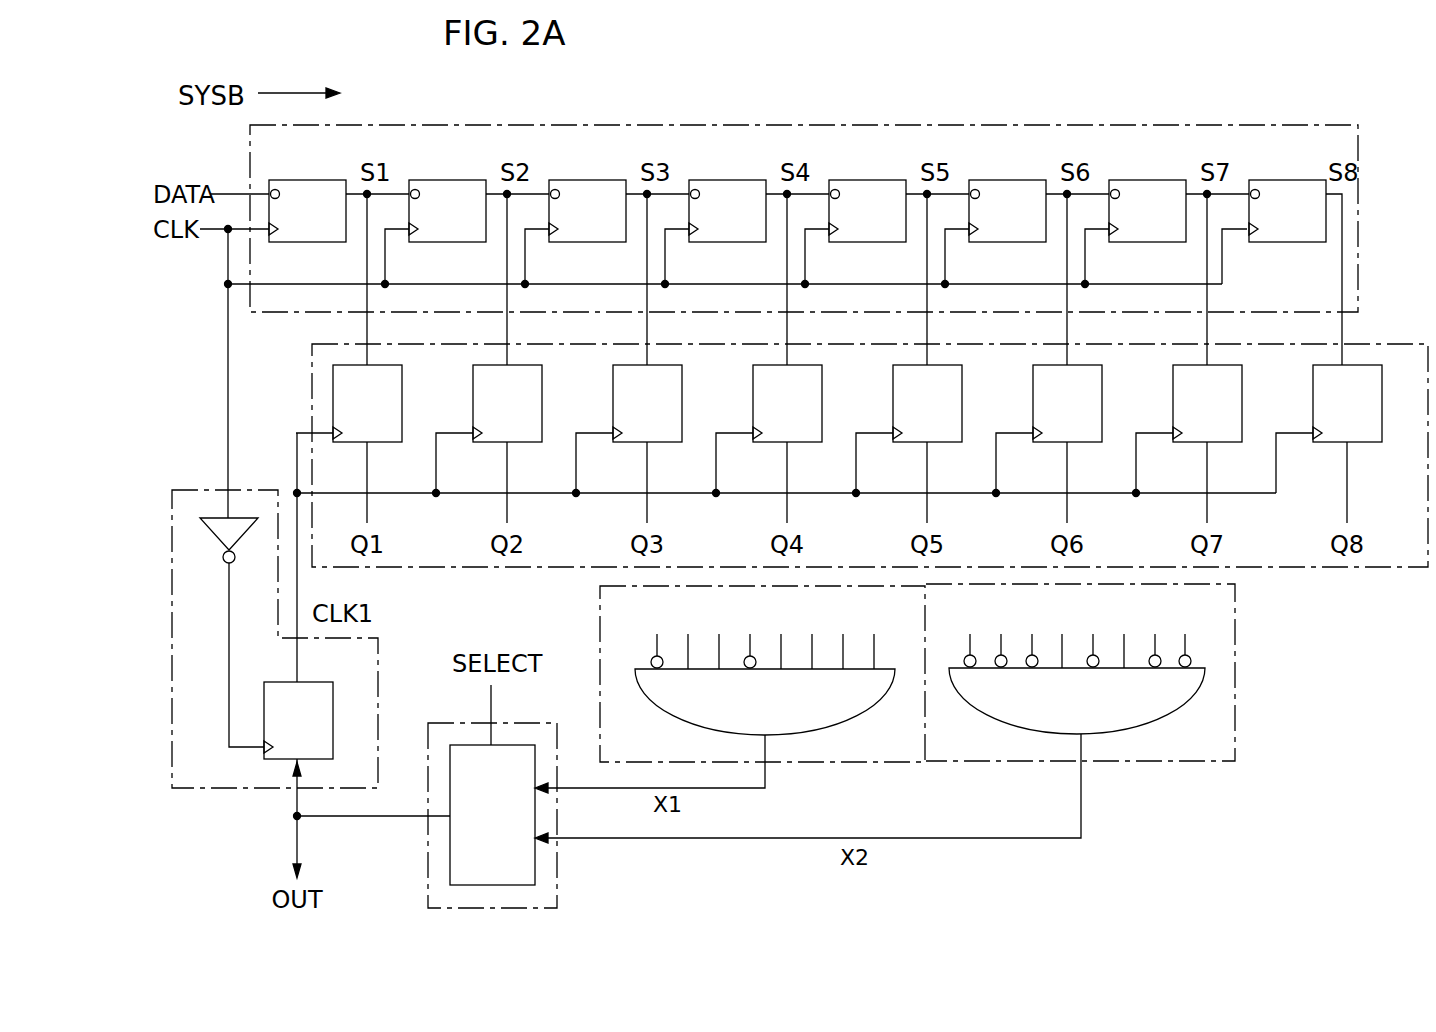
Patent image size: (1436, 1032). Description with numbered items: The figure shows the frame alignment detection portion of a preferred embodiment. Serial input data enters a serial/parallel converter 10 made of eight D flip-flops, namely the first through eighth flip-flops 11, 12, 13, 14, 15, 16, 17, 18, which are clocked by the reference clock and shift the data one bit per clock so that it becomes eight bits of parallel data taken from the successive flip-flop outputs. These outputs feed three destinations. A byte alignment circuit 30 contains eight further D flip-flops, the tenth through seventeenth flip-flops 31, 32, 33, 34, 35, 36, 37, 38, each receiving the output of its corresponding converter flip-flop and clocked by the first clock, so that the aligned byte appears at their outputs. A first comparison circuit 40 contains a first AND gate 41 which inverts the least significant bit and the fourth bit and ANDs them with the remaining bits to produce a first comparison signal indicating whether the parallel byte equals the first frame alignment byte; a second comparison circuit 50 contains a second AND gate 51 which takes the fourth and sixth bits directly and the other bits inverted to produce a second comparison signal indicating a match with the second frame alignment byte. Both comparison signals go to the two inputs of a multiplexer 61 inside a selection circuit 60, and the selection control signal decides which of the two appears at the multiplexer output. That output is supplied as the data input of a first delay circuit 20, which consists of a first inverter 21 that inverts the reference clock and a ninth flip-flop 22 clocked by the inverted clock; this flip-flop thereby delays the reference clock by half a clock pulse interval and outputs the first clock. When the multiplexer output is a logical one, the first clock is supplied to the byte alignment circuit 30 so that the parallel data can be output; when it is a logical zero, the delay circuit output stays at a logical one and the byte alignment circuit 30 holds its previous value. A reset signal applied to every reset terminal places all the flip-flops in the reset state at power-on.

The serial/parallel converter 10 is at (1083, 124).
The 1-st flip-flop 11 is at (318, 185).
The 2-nd flip-flop 12 is at (458, 185).
The 3-rd flip-flop 13 is at (598, 185).
The 4-th flip-flop 14 is at (738, 185).
The 5-th flip-flop 15 is at (878, 185).
The 6-th flip-flop 16 is at (1018, 185).
The 7-th flip-flop 17 is at (1158, 185).
The 8-th flip-flop 18 is at (1298, 185).
The first delay circuit 20 is at (378, 650).
The first inverter 21 is at (215, 545).
The 9-th flip-flop 22 is at (333, 692).
The byte alignment circuit 30 is at (1360, 343).
The 10-th flip-flop 31 is at (403, 408).
The 11-th flip-flop 32 is at (543, 408).
The 12-th flip-flop 33 is at (683, 408).
The 13-th flip-flop 34 is at (823, 408).
The 14-th flip-flop 35 is at (963, 408).
The 15-th flip-flop 36 is at (1103, 408).
The 16-th flip-flop 37 is at (1243, 408).
The 17-th flip-flop 38 is at (1383, 408).
The first comparison circuit 40 is at (600, 640).
The first AND gate 41 is at (845, 722).
The second comparison circuit 50 is at (1235, 683).
The second AND gate 51 is at (1155, 720).
The selection circuit 60 is at (557, 878).
The multiplexer 61 is at (450, 860).